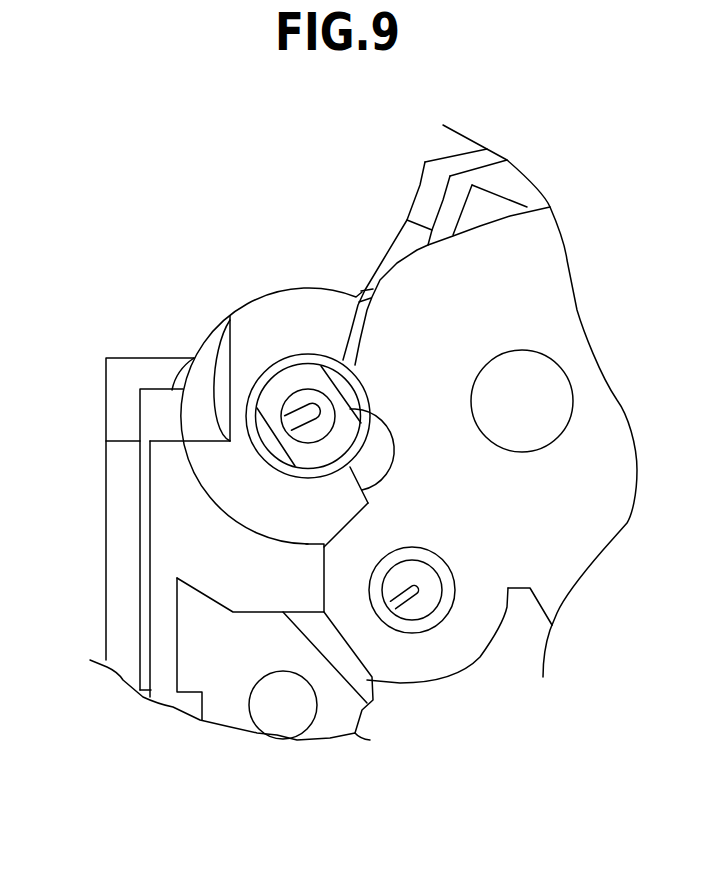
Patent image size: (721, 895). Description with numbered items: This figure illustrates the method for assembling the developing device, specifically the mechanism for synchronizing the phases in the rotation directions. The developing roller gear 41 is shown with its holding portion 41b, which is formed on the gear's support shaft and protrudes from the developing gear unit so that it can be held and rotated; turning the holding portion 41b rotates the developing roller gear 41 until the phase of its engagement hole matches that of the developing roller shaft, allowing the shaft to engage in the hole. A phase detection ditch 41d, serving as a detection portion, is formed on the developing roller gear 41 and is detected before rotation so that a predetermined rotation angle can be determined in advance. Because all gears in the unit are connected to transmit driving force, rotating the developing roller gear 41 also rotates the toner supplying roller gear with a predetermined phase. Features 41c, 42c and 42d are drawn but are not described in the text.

The developing roller gear 41 is at (210, 355).
The holding portion 41b is at (363, 493).
The cam body of first rotary member 41c is at (322, 400).
The phase detection ditch 41d is at (293, 423).
The boss of second rotary member 42c is at (437, 593).
The shaft hole with key slot of second rotary member 42d is at (400, 597).